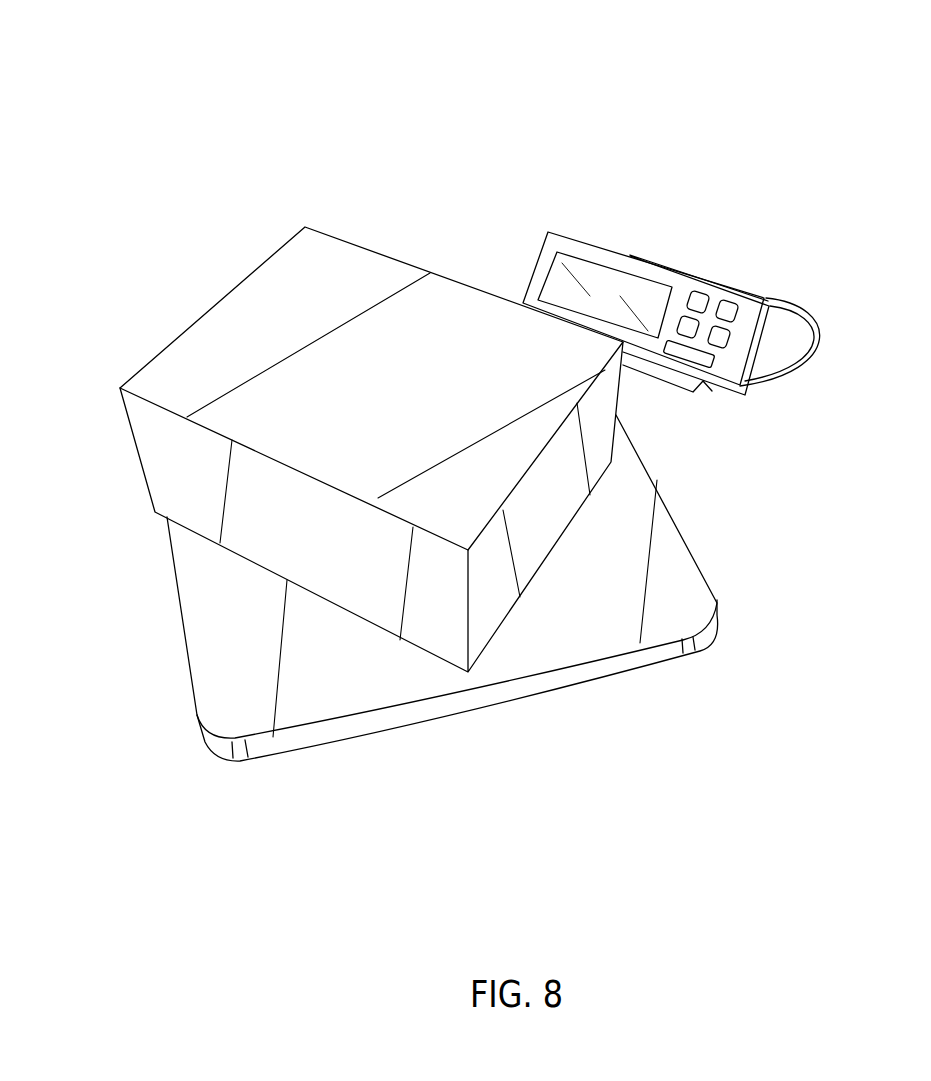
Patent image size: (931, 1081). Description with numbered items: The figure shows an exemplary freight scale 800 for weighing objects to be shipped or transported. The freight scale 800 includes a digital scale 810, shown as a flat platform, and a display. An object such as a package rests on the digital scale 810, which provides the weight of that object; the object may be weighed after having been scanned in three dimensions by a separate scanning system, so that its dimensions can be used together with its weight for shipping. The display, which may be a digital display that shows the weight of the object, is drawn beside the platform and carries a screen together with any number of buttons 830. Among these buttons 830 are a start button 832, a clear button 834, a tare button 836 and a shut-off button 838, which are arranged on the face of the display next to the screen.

The freight scale 800 is at (167, 80).
The digital scale 810 is at (208, 643).
The buttons 830 is at (664, 315).
The start button 832 is at (697, 289).
The clear button 834 is at (731, 300).
The tare button 836 is at (722, 334).
The shut-off button 838 is at (696, 384).